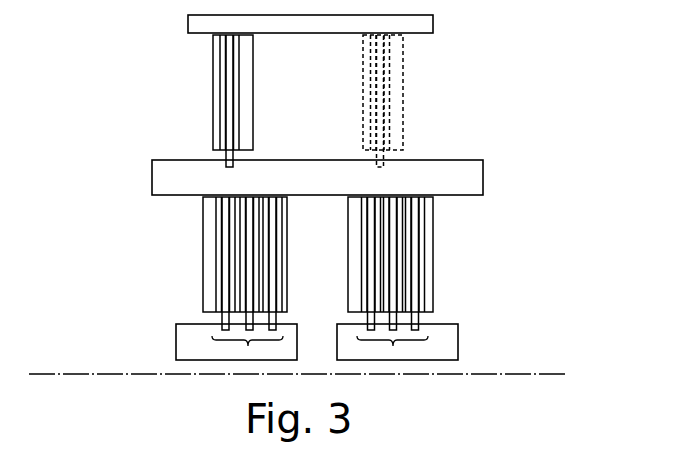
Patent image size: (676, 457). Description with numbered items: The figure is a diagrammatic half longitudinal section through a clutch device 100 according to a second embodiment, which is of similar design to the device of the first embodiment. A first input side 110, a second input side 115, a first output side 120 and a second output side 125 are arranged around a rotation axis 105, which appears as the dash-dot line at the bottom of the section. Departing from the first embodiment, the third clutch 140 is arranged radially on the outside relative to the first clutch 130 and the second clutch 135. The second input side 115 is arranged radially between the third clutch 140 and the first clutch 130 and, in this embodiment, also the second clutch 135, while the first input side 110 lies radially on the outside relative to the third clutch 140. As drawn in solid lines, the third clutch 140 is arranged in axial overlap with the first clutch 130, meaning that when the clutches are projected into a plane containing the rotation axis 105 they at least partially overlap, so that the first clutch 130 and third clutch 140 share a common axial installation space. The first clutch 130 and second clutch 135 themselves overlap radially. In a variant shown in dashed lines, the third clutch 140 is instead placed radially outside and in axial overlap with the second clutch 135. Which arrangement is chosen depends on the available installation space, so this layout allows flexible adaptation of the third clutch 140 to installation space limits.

The clutch device 100 is at (112, 218).
The rotation axis 105 is at (552, 373).
The first input side 110 is at (427, 24).
The second input side 115 is at (470, 178).
The first output side 120 is at (187, 333).
The second output side 125 is at (452, 330).
The first clutch 130 is at (248, 346).
The second clutch 135 is at (393, 346).
The third clutch 140 is at (193, 33).